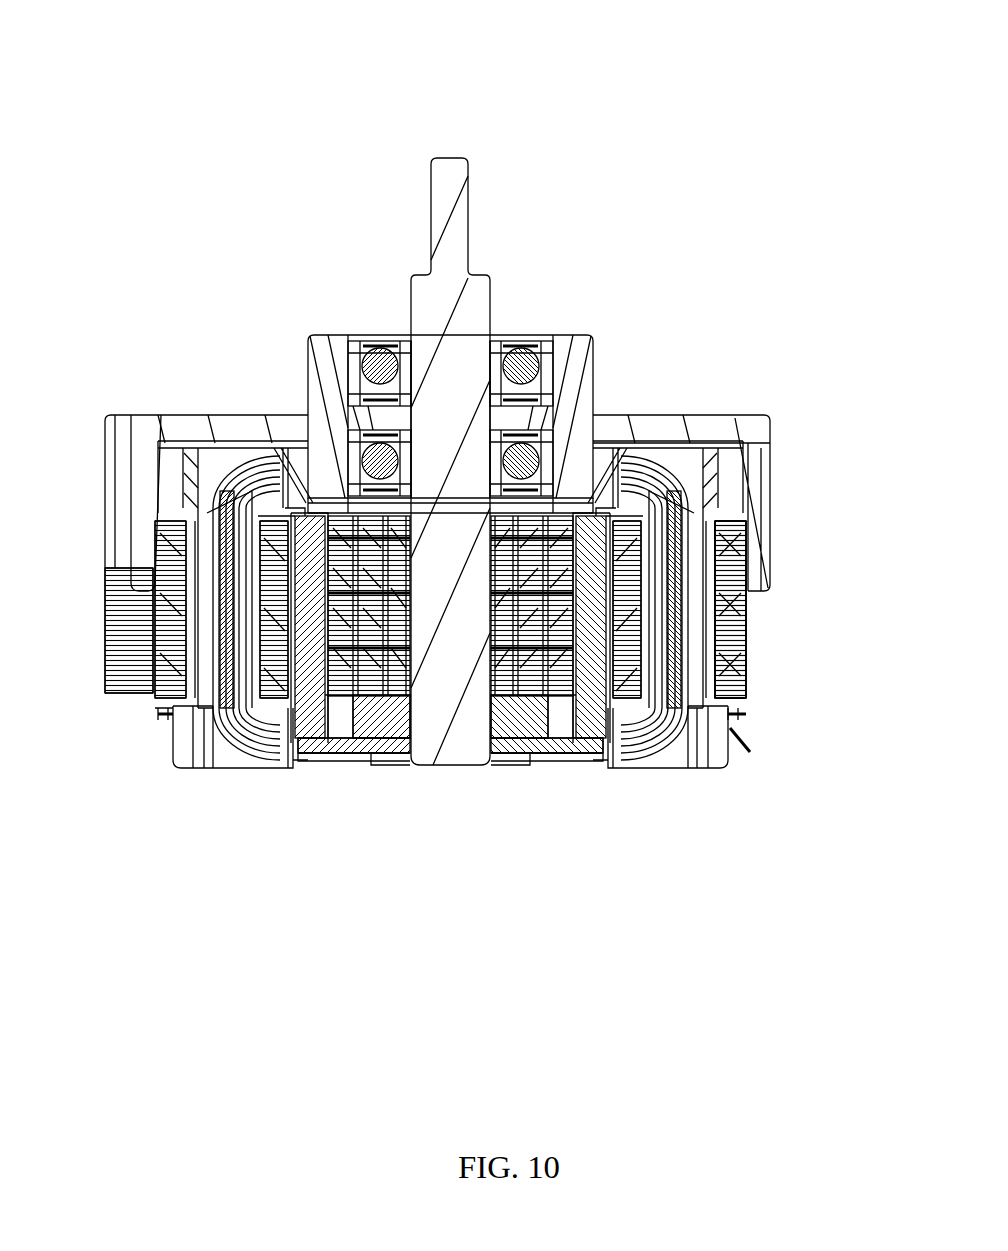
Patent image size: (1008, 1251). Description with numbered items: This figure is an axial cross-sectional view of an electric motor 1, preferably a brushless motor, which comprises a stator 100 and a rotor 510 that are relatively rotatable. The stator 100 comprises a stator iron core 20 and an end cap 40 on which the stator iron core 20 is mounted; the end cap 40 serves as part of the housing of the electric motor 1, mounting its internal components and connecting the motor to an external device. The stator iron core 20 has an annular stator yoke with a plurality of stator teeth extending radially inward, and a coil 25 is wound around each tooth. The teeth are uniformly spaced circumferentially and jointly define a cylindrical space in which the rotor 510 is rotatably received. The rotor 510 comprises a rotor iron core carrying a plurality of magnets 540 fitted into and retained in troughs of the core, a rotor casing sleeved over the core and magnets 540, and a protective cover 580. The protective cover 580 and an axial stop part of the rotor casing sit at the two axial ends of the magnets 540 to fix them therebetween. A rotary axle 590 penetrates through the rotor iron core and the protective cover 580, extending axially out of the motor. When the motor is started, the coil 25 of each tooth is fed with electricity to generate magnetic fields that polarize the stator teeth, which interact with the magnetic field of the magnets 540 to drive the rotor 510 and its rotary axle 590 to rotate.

The electric motor 1 is at (449, 29).
The stator iron core 20 is at (118, 657).
The coil 25 is at (225, 748).
The end cap 40 is at (570, 366).
The stator 100 is at (738, 632).
The rotor 510 is at (492, 742).
The magnets 540 is at (585, 755).
The protective cover 580 is at (350, 745).
The rotary axle 590 is at (468, 298).